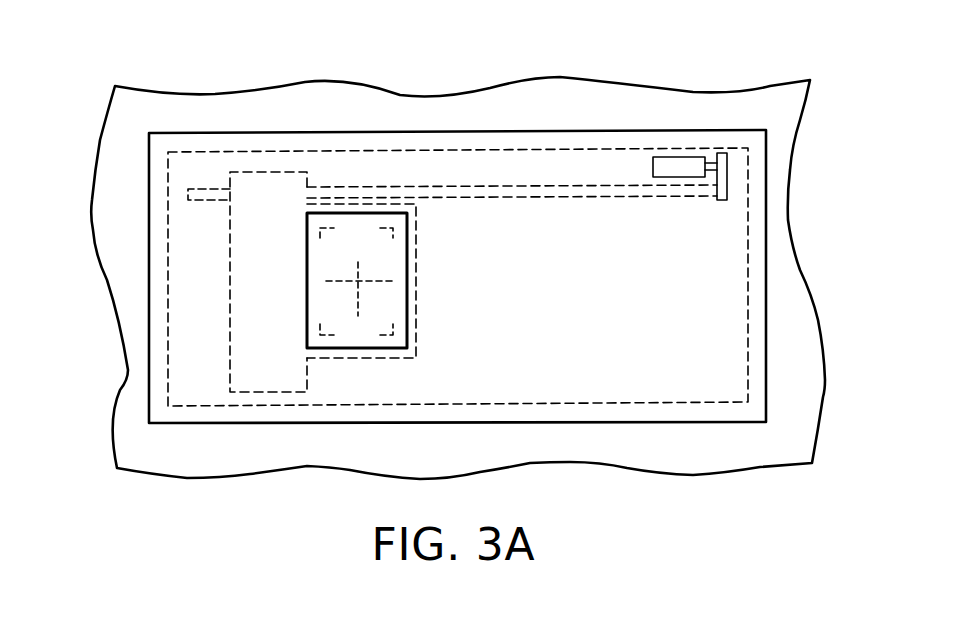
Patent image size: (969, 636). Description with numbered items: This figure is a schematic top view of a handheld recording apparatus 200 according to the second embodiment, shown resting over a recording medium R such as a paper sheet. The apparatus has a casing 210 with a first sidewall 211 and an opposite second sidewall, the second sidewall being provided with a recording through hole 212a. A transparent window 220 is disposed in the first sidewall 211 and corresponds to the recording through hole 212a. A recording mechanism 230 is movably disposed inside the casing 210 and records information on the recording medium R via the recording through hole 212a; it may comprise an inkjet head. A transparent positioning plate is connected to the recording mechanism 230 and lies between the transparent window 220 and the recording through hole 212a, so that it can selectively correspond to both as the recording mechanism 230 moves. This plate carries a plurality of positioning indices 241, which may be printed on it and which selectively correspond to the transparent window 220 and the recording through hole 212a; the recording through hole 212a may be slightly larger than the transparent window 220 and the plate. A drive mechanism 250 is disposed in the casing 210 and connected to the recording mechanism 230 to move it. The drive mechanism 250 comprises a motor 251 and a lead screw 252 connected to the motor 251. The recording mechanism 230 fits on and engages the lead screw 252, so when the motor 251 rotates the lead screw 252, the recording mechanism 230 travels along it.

The handheld recording apparatus 200 is at (223, 114).
The casing 210 is at (147, 170).
The first sidewall 211 is at (698, 372).
The recording through hole 212a is at (417, 227).
The transparent window 220 is at (333, 213).
The recording mechanism 230 is at (252, 242).
The positioning indices 241 is at (358, 256).
The drive mechanism 250 is at (730, 167).
The motor 251 is at (680, 165).
The lead screw 252 is at (590, 190).
The recording medium R is at (773, 458).